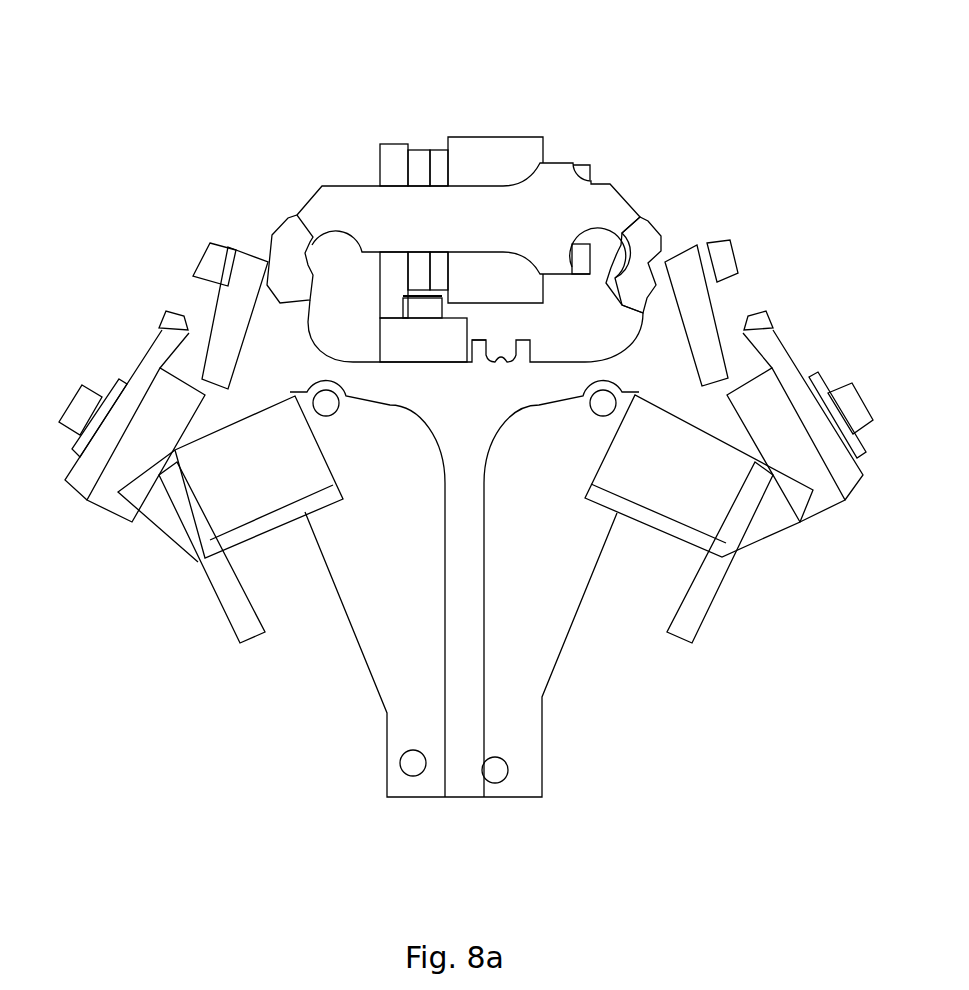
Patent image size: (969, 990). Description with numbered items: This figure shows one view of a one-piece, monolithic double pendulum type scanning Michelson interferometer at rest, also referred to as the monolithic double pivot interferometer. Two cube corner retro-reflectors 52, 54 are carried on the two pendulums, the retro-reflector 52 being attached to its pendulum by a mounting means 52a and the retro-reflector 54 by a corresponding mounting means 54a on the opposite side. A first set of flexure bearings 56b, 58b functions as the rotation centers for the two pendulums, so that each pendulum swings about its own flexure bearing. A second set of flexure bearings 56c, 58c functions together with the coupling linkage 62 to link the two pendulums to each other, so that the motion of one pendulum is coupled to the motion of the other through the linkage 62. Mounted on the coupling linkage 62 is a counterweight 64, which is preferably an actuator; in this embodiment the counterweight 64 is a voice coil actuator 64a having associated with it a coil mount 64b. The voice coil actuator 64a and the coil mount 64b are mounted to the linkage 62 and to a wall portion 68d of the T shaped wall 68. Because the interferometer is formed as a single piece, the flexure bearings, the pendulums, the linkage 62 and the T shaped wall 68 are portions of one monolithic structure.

The cube corner retro-reflector 52 is at (722, 492).
The mounting means 52a is at (788, 338).
The cube corner retro-reflector 54 is at (248, 488).
The clamp bolt 54a is at (147, 354).
The flexure bearing 56b is at (727, 242).
The flexure bearing 56c is at (637, 218).
The flexure bearing 58b is at (295, 214).
The flexure bearing 58c is at (203, 267).
The coupling linkage 62 is at (370, 212).
The counterweight 64 is at (479, 97).
The voice coil actuator 64a is at (503, 140).
The coil mount 64b is at (383, 146).
The T shaped wall 68 is at (465, 625).
The wall portion 68d is at (467, 362).